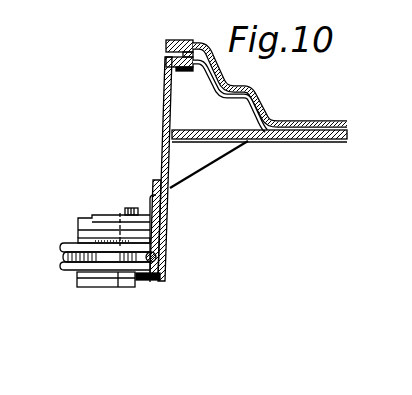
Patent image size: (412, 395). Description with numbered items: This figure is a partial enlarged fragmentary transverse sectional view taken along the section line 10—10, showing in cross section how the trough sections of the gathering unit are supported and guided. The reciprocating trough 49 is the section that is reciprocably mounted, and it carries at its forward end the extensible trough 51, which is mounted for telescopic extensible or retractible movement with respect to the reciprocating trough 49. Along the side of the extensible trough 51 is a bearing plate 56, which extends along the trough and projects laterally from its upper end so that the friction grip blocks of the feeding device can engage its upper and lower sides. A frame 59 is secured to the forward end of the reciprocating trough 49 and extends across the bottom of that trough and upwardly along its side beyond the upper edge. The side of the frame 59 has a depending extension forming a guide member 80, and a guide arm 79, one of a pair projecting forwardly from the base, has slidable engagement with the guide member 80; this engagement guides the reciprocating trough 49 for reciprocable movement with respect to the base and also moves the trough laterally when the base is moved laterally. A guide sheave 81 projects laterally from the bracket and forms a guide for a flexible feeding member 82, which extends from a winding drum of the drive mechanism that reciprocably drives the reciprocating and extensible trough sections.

The section line 10— 10 is at (132, 6).
The reciprocating trough 49 is at (157, 76).
The extensible trough 51 is at (270, 88).
The bearing plate 56 is at (160, 42).
The frame 59 is at (149, 169).
The guide arm 79 is at (129, 230).
The guide member 80 is at (143, 241).
The guide sheave 81 is at (102, 273).
The flexible feeding member 82 is at (180, 258).